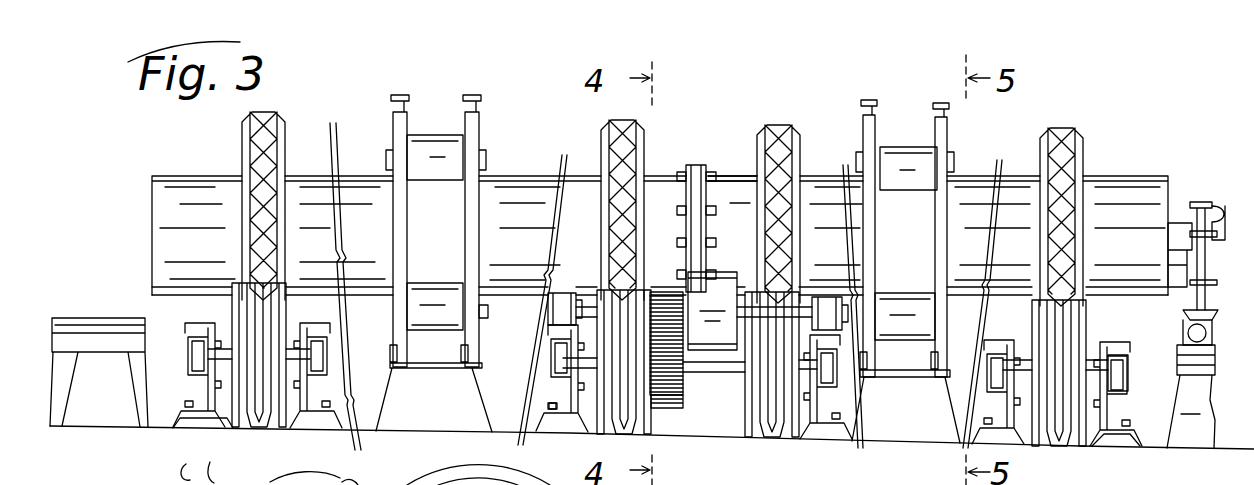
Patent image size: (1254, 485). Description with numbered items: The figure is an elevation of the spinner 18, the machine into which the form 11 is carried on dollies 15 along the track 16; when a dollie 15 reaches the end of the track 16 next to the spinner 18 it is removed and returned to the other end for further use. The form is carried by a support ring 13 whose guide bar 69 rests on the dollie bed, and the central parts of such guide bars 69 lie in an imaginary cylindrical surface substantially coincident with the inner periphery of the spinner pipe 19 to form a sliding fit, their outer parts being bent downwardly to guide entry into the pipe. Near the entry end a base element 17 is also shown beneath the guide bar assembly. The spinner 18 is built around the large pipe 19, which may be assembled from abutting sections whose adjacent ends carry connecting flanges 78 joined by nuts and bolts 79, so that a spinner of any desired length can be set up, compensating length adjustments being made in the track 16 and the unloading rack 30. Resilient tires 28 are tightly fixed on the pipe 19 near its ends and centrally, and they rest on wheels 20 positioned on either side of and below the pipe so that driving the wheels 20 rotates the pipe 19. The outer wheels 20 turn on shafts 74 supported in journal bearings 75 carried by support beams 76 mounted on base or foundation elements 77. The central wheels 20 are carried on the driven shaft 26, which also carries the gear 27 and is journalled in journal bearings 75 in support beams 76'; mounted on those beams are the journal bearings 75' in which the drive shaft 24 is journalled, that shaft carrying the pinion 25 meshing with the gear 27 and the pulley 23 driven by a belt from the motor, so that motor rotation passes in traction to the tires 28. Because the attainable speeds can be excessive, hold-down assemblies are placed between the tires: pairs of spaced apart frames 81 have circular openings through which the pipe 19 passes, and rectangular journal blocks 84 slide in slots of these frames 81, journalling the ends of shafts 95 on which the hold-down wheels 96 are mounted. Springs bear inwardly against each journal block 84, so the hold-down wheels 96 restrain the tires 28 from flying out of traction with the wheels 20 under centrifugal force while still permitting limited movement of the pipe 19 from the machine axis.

The unloading rack 30 is at (97, 306).
The spinner 18 is at (508, 178).
The frames 81 is at (470, 200).
The hold-down wheels 96 is at (438, 283).
The shafts 95 is at (484, 312).
The journal blocks 84 is at (486, 322).
The journal bearings 75' is at (566, 330).
The support beams 76' is at (525, 396).
The base or foundation elements 77 is at (1140, 432).
The nuts and bolts 79 is at (680, 178).
The connecting flanges 78 is at (692, 165).
The pipe 19 is at (732, 182).
The tires 28 is at (775, 123).
The pinion 25 is at (660, 292).
The pulley 23 is at (712, 311).
The drive shaft 24 is at (813, 297).
The driven shaft 26 is at (712, 372).
The gear 27 is at (664, 402).
The journal bearings 75 is at (670, 384).
The guide bar 69 is at (1197, 202).
The form 11 is at (1180, 223).
The support ring 13 is at (1214, 206).
The dollies 15 is at (1190, 316).
The track 16 is at (1182, 336).
The wheels 20 is at (1086, 327).
The shafts 74 is at (1020, 340).
The support beams 76 is at (1134, 381).
The base block 17 is at (1191, 396).